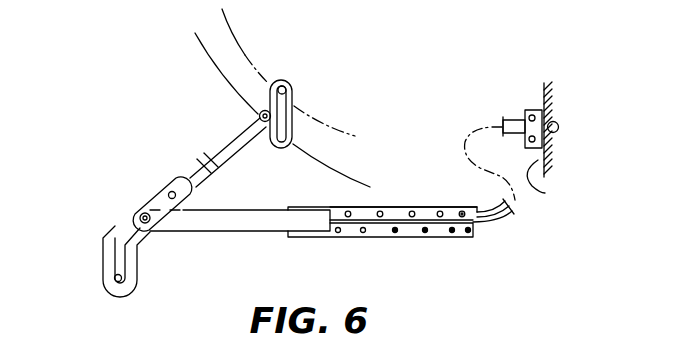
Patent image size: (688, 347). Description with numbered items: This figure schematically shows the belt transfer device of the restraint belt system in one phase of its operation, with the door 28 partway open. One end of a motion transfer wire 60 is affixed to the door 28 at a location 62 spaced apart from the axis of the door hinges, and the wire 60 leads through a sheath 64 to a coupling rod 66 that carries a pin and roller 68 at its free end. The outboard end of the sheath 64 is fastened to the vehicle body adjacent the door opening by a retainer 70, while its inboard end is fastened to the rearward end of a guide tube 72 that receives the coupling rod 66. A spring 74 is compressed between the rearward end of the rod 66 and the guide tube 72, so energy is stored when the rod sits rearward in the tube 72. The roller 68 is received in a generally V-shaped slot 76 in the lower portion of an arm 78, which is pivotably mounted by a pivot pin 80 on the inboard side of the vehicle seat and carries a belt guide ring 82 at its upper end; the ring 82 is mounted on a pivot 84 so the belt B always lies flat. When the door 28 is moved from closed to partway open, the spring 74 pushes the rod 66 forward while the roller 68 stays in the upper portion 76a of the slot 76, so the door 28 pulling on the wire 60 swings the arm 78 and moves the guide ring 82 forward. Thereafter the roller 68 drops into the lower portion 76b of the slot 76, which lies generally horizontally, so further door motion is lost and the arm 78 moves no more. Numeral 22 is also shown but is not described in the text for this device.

The belt B is at (290, 98).
The belt guide ring 82 is at (287, 83).
The pivot 84 is at (259, 115).
The arm 78 is at (188, 177).
The pin and roller 68 is at (147, 208).
The pivot pin 80 is at (168, 192).
The upper portion of the slot 76a is at (138, 220).
The V-shaped slot 76 is at (112, 245).
The lower portion of the slot 76b is at (125, 278).
The coupling rod 66 is at (221, 232).
The motion transfer wire 60 is at (352, 237).
The spring 74 is at (378, 207).
The guide tube 72 is at (465, 188).
The sheath 64 is at (480, 226).
The retainer 70 is at (527, 108).
The location 62 is at (560, 124).
The door 28 is at (550, 103).
The frame member 22 is at (552, 186).